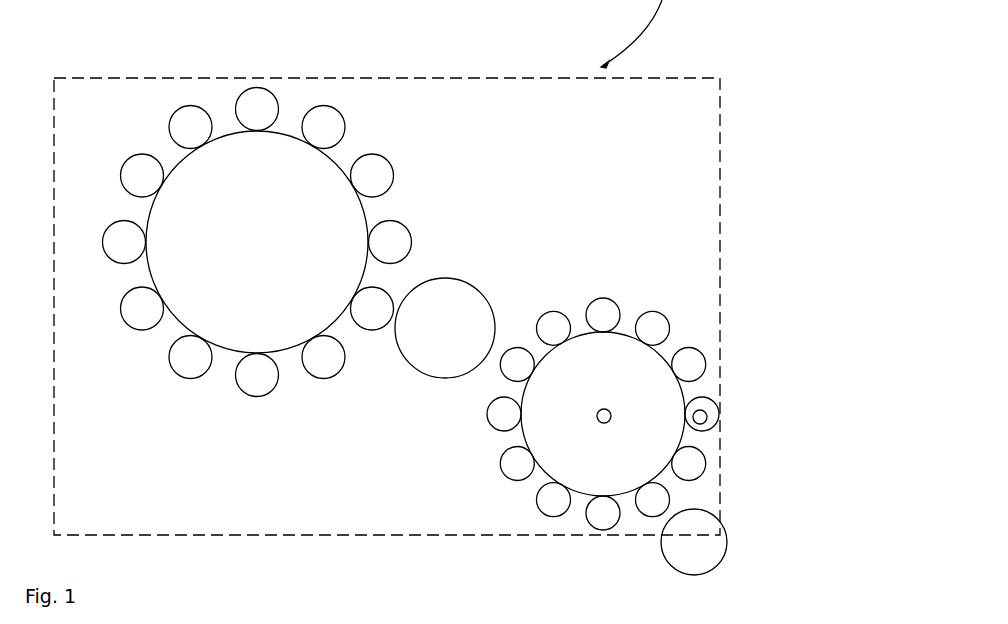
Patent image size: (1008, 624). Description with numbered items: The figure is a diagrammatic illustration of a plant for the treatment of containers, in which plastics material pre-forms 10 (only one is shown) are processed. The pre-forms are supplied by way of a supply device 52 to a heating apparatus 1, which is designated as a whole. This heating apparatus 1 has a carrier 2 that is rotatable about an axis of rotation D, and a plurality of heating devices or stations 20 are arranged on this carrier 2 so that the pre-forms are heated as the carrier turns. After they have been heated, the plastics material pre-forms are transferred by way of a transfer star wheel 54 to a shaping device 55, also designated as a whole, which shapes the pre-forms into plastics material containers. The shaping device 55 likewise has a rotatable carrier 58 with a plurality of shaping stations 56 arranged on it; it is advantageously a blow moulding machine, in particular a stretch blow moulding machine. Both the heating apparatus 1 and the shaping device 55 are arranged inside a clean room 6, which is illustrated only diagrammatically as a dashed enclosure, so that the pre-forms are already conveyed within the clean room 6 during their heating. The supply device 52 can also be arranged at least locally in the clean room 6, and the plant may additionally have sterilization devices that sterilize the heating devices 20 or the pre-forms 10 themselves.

The heating apparatus 1 is at (631, 303).
The carrier 2 is at (544, 430).
The clean room 6 is at (294, 518).
The plastics material pre-form 10 is at (702, 418).
The heating devices or stations 20 is at (661, 336).
The supply device 52 is at (676, 556).
The transfer star wheel 54 is at (458, 312).
The shaping device 55 is at (358, 148).
The shaping stations 56 is at (262, 372).
The rotatable carrier 58 is at (201, 256).
The axis of rotation D is at (612, 412).